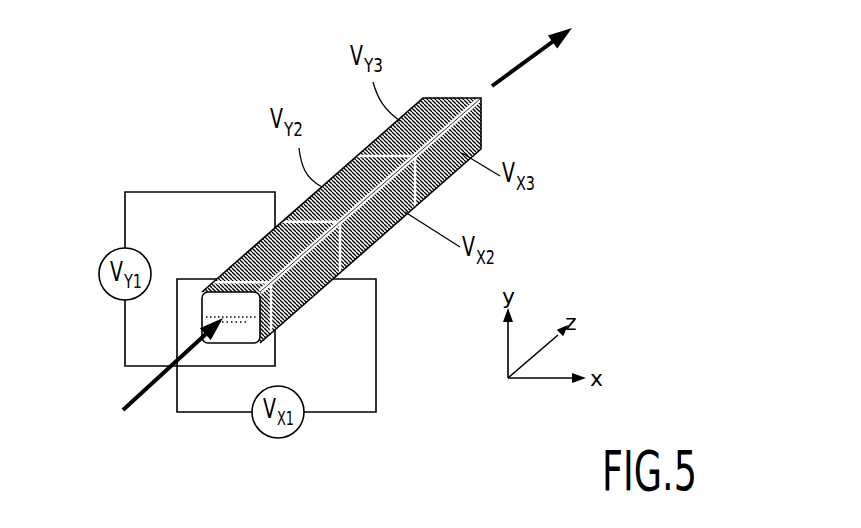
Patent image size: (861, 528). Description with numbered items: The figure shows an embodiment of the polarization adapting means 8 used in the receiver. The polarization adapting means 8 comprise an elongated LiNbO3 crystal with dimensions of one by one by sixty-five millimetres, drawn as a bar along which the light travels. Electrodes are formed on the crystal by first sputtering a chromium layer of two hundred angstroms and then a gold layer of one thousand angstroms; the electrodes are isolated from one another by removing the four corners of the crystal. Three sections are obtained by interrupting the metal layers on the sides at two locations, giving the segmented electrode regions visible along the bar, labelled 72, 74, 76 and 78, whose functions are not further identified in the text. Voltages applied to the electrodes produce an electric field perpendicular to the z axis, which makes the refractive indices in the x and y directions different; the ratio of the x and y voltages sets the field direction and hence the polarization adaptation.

The polarization adapting means 8 is at (401, 220).
The electrode 72 is at (483, 119).
The electrode 74 is at (440, 187).
The electrode 76 is at (380, 236).
The electrode 78 is at (298, 299).